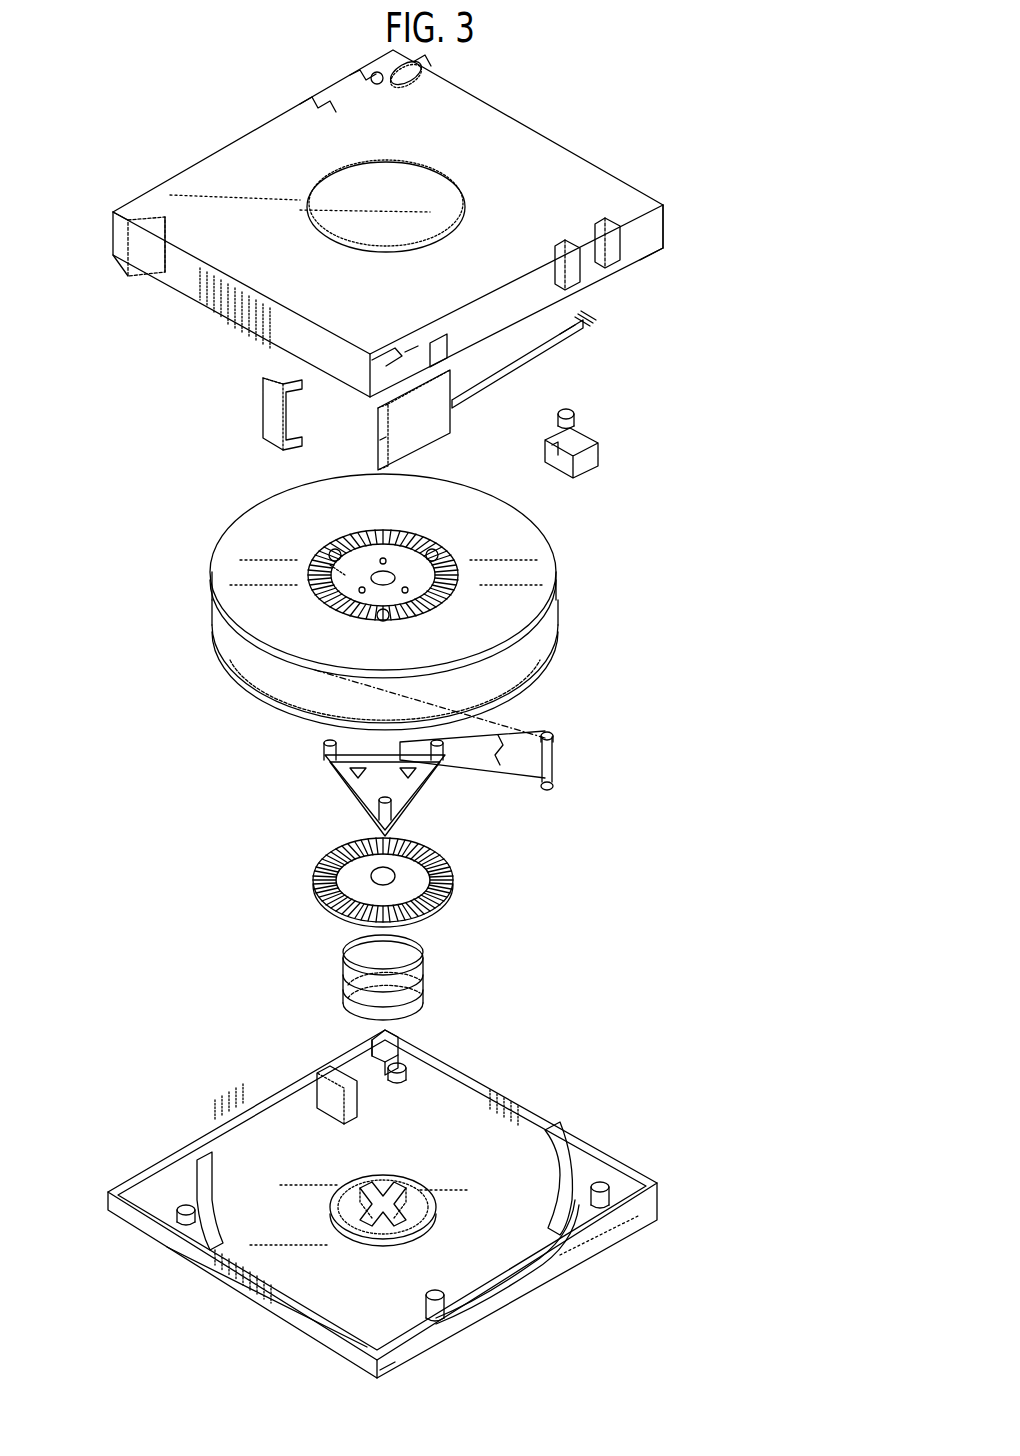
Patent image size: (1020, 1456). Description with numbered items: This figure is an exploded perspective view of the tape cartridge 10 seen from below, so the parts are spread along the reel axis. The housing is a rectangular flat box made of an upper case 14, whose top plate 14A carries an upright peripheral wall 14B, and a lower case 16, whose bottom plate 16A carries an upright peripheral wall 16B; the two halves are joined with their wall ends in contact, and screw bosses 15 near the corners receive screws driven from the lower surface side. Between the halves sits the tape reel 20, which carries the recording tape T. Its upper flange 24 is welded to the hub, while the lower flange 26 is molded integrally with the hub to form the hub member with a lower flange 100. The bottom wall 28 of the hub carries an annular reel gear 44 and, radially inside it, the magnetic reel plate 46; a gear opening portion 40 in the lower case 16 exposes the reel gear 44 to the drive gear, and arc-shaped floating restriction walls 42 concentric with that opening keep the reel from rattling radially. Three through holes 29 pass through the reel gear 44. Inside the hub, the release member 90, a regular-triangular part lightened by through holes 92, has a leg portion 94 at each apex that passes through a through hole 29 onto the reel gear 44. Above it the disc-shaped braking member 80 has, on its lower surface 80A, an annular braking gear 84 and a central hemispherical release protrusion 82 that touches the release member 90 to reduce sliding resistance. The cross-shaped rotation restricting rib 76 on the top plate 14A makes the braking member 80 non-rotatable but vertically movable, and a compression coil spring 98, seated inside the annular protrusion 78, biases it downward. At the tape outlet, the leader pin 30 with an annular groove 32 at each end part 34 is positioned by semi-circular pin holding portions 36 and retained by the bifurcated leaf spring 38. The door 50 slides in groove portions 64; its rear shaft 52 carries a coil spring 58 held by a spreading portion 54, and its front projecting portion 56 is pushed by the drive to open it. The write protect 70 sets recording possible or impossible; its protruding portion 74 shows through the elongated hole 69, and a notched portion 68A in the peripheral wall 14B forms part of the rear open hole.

The tape cartridge 10 is at (630, 132).
The upper case 14 is at (436, 1192).
The top plate 14A is at (505, 1150).
The peripheral wall 14B is at (600, 1238).
The screw boss 15 is at (178, 1218).
The lower case 16 is at (440, 223).
The bottom plate 16A is at (248, 155).
The peripheral wall 16B is at (645, 262).
The tape reel 20 is at (379, 597).
The upper flange 24 is at (556, 640).
The lower flange 26 is at (515, 530).
The bottom wall 28 is at (400, 580).
The through hole 29 is at (330, 560).
The leader pin 30 is at (469, 758).
The annular groove 32 is at (556, 738).
The end part 34 is at (547, 733).
The pin holding portion 36 is at (420, 348).
The leaf spring 38 is at (262, 416).
The gear opening portion 40 is at (426, 168).
The floating restriction wall 42 is at (350, 1090).
The reel gear 44 is at (445, 550).
The reel plate 46 is at (345, 580).
The door 50 is at (372, 420).
The shaft 52 is at (518, 372).
The spreading portion 54 is at (585, 322).
The projecting portion 56 is at (380, 448).
The coil spring 58 is at (570, 345).
The groove portion 64 is at (450, 1340).
The notched portion 68A is at (405, 1045).
The elongated hole 69 is at (420, 67).
The write protect 70 is at (606, 432).
The protruding portion 74 is at (575, 410).
The rotation restricting rib 76 is at (395, 1186).
The annular protrusion 78 is at (368, 1238).
The braking member 80 is at (394, 868).
The lower surface 80A is at (410, 875).
The release protrusion 82 is at (392, 868).
The braking gear 84 is at (318, 868).
The release member 90 is at (357, 785).
The through hole 92 is at (350, 773).
The leg portion 94 is at (322, 750).
The compression coil spring 98 is at (428, 955).
The hub member with a lower flange 100 is at (212, 598).